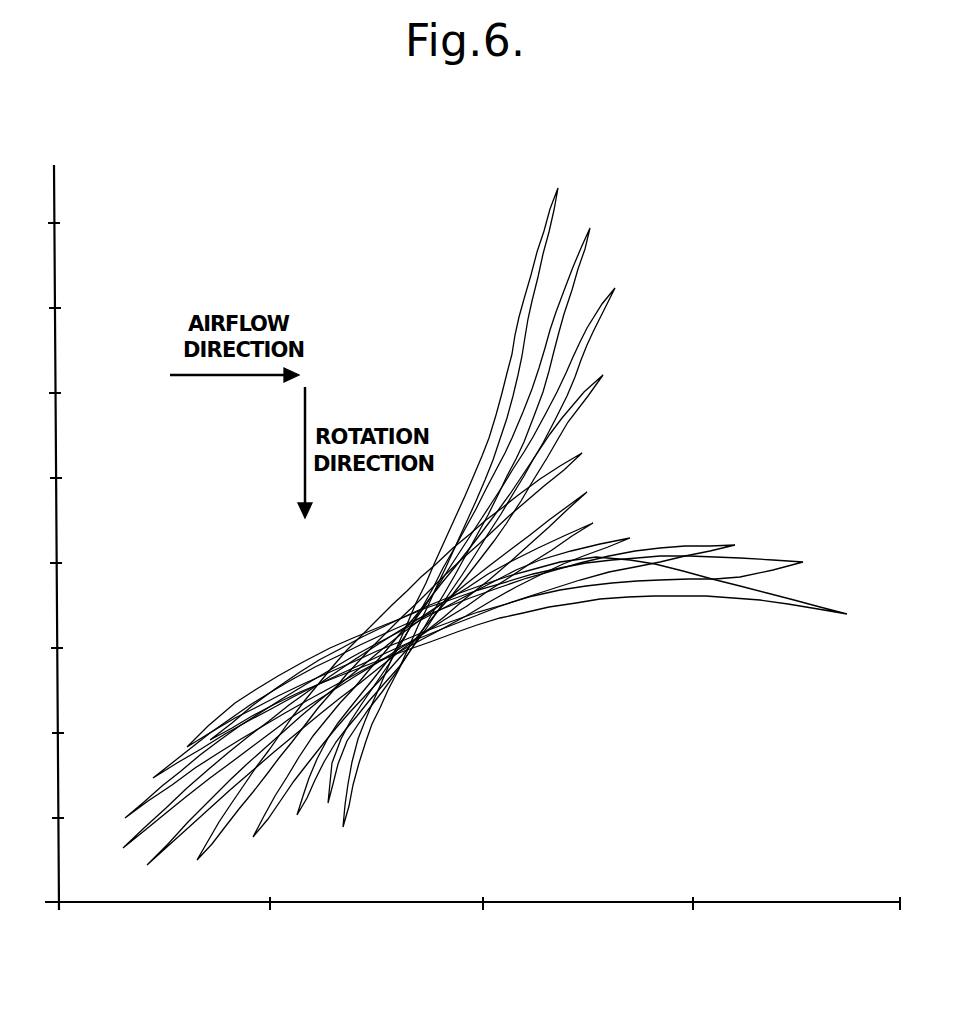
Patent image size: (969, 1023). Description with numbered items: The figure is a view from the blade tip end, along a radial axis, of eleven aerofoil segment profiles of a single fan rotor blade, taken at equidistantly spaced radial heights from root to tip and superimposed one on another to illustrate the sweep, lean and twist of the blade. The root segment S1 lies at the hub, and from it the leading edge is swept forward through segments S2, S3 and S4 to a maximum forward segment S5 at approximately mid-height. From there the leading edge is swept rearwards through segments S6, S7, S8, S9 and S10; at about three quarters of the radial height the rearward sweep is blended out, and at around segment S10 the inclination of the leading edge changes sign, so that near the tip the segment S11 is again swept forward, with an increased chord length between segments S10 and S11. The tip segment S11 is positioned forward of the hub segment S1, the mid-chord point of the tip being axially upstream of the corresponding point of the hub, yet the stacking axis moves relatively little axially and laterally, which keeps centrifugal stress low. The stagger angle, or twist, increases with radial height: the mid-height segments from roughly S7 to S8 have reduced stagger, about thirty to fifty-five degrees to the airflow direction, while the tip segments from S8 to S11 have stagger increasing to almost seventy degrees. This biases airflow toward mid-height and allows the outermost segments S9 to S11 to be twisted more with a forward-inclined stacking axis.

The root segment S1 is at (300, 677).
The blade segment profile S2 is at (233, 703).
The blade segment profile S3 is at (162, 767).
The blade segment profile S4 is at (137, 803).
The maximum forward segment S5 is at (133, 848).
The blade segment profile S6 is at (163, 853).
The mid-height segment S7 is at (207, 847).
The mid-height segment S8 is at (257, 832).
The outer aerofoil segment S9 is at (302, 810).
The blade segment profile S10 is at (328, 803).
The blade tip segment S11 is at (345, 823).